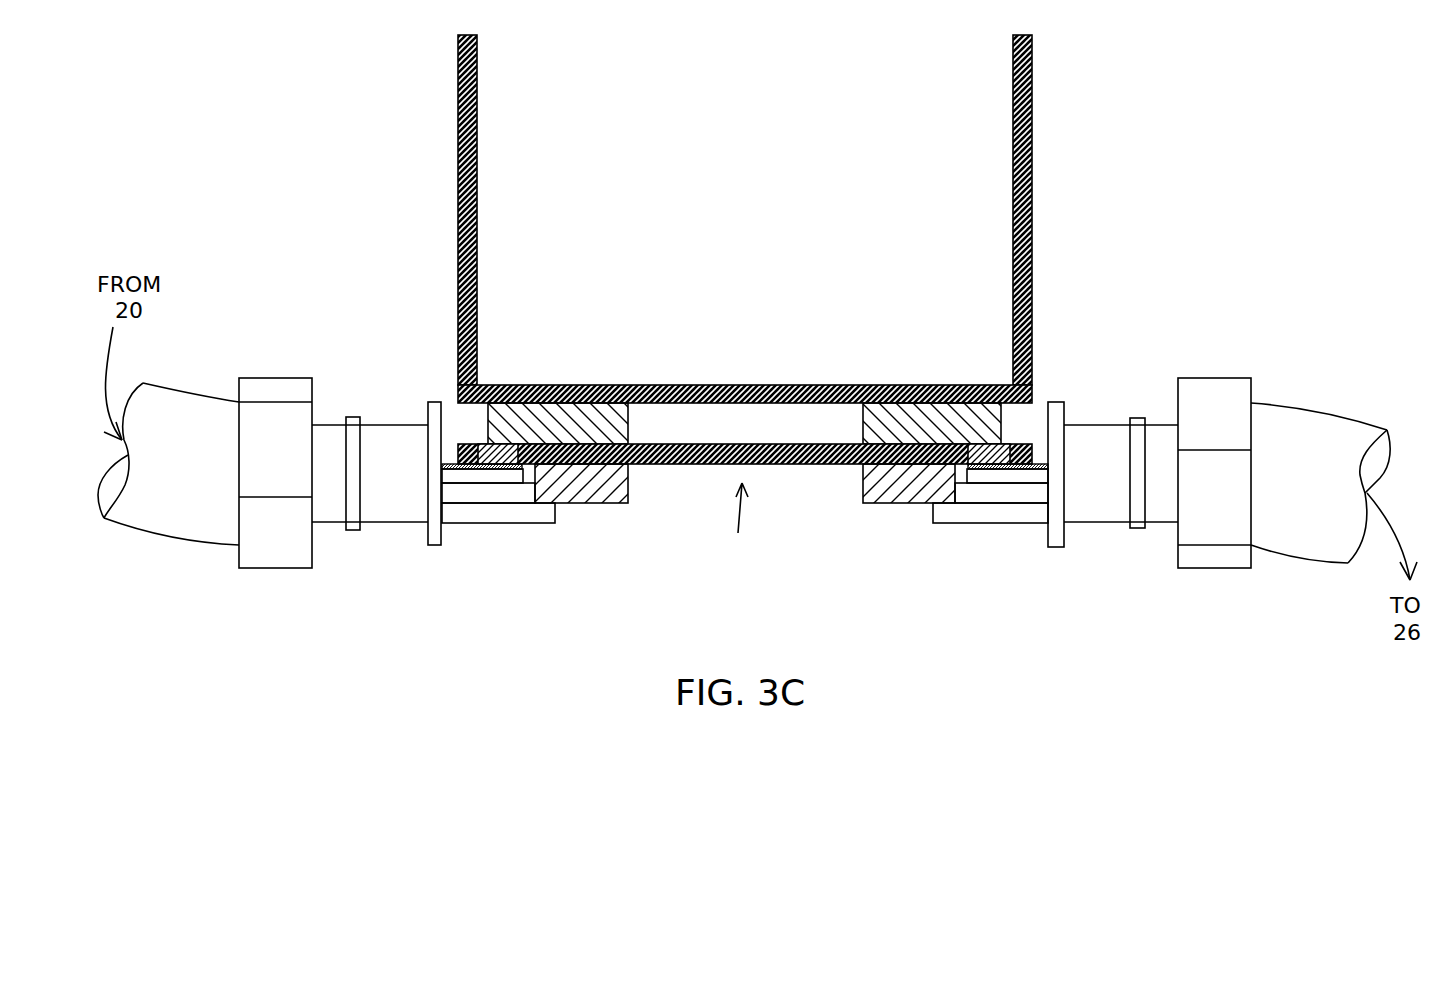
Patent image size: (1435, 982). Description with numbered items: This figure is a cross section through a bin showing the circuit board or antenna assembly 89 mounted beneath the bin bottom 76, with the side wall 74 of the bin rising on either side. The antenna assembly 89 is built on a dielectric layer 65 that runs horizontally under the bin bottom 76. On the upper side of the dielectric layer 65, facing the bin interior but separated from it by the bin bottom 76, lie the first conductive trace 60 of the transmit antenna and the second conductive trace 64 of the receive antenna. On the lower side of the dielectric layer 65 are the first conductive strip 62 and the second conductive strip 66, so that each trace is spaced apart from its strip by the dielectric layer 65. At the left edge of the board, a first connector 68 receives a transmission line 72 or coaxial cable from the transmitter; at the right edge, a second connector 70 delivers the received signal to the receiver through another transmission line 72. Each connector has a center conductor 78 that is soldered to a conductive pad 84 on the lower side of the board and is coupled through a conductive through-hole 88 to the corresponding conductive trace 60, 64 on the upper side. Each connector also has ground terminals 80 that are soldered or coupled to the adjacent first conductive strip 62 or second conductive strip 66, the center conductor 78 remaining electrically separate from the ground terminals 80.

The first conductive trace 60 is at (607, 420).
The first conductive strip 62 is at (602, 488).
The second conductive trace 64 is at (873, 418).
The dielectric layer 65 is at (772, 466).
The second conductive strip 66 is at (873, 488).
The first connector 68 is at (373, 423).
The second connector 70 is at (1107, 425).
The transmission line 72 is at (193, 395).
The side wall 74 is at (458, 163).
The bin bottom 76 is at (719, 385).
The center conductor 78 is at (473, 477).
The ground terminals 80 is at (440, 410).
The conductive pad 84 is at (510, 477).
The conductive through-hole 88 is at (508, 448).
The antenna assembly 89 is at (739, 522).